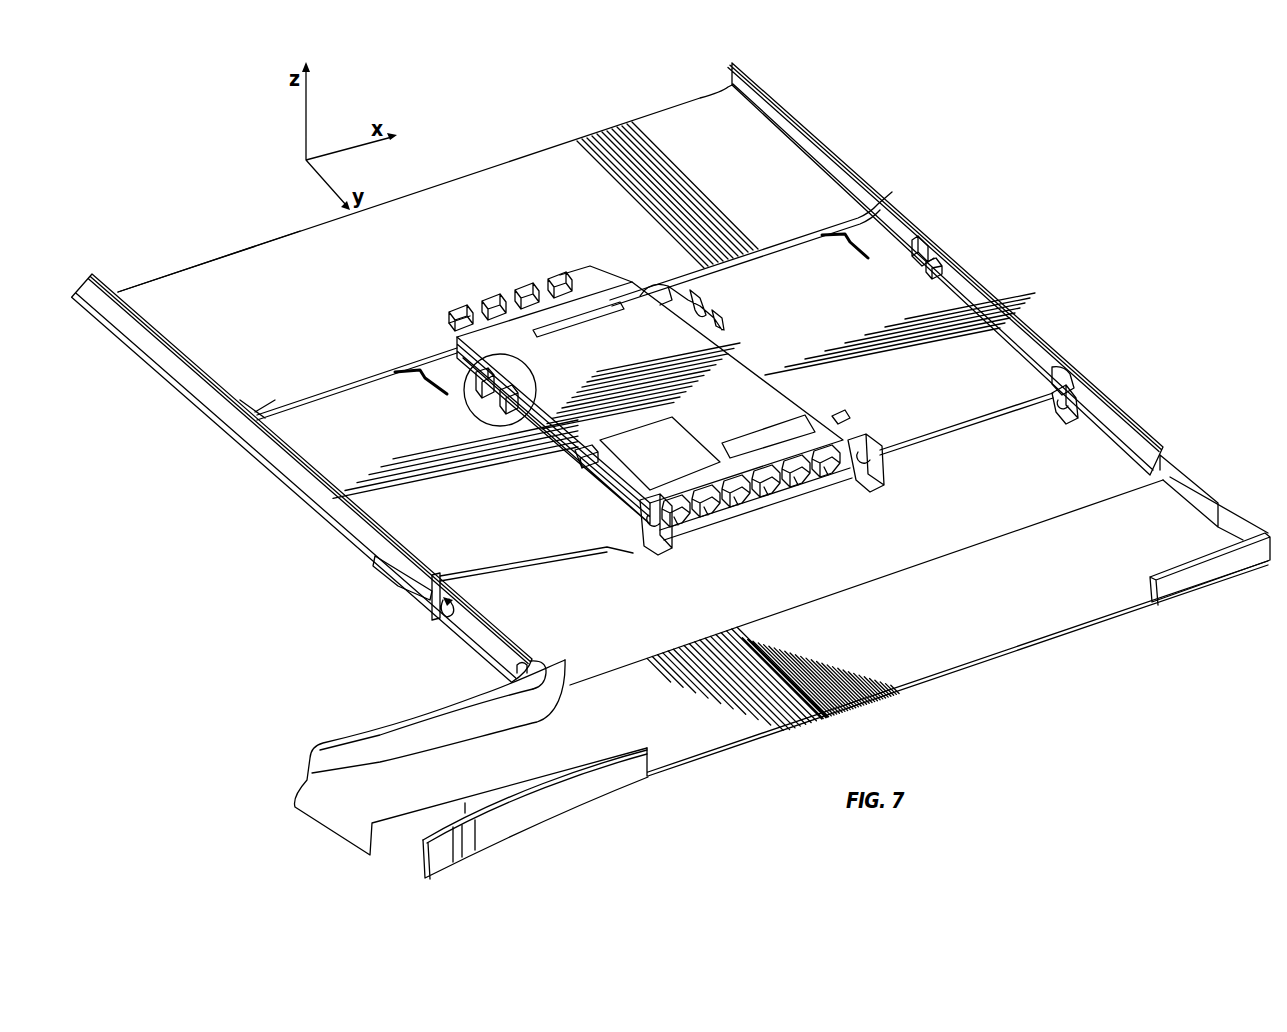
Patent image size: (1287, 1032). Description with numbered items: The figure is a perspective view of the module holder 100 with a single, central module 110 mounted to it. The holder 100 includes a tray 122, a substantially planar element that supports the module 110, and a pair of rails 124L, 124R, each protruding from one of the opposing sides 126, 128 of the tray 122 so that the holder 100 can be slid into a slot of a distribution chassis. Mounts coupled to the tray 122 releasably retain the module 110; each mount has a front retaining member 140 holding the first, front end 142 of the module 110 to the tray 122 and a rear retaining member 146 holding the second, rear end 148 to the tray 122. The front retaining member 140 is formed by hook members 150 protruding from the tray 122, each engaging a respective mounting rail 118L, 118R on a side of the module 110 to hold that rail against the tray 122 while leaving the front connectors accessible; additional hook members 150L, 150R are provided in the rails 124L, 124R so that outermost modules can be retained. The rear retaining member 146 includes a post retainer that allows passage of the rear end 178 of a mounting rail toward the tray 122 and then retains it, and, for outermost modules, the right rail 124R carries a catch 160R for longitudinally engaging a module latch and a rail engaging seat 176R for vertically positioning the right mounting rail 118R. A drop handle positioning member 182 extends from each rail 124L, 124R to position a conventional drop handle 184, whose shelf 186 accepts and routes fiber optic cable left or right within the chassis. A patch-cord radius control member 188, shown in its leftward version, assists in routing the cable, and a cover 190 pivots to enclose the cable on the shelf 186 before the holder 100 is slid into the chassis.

The module holder 100 is at (461, 168).
The module 110 is at (643, 364).
The left mounting rail 118L is at (585, 462).
The right mounting rail 118R is at (838, 420).
The tray 122 is at (762, 402).
The left rail 124L is at (337, 527).
The right rail 124R is at (985, 307).
The side of tray 126 is at (247, 367).
The side of tray 128 is at (780, 168).
The front retaining member 140 is at (456, 599).
The first end of module 142 is at (802, 424).
The rear retaining member 146 is at (473, 425).
The second end of module 148 is at (600, 308).
The hook member 150 is at (652, 550).
The left hook member 150L is at (405, 601).
The right hook member 150R is at (1062, 376).
The catch 160R is at (916, 246).
The rail engaging seat 176R is at (936, 270).
The rear end of mounting rail 178 is at (540, 396).
The drop handle positioning member 182 is at (1088, 392).
The drop handle 184 is at (710, 774).
The shelf 186 is at (1100, 466).
The patch-cord radius control member 188 is at (347, 817).
The cover 190 is at (1017, 612).